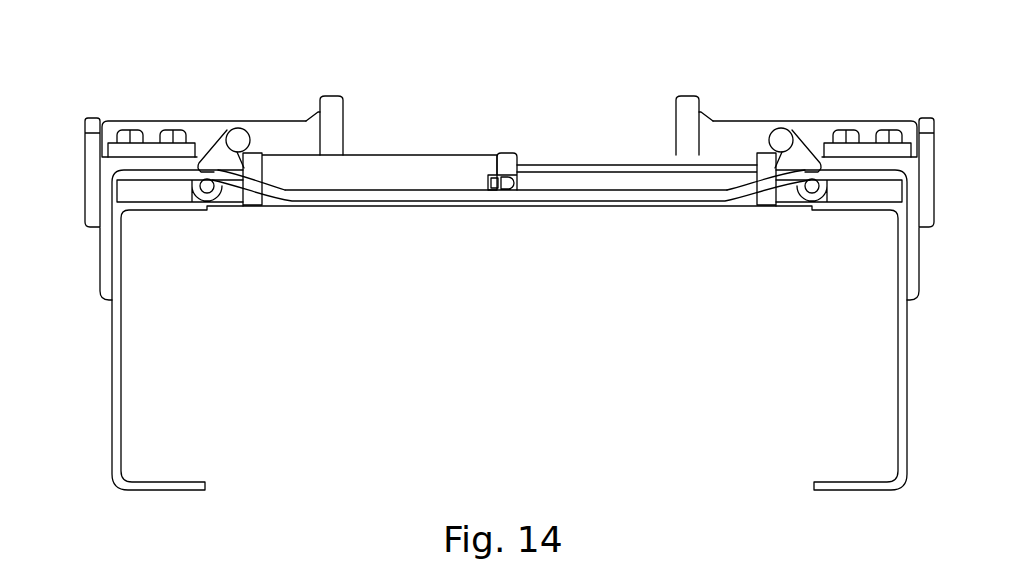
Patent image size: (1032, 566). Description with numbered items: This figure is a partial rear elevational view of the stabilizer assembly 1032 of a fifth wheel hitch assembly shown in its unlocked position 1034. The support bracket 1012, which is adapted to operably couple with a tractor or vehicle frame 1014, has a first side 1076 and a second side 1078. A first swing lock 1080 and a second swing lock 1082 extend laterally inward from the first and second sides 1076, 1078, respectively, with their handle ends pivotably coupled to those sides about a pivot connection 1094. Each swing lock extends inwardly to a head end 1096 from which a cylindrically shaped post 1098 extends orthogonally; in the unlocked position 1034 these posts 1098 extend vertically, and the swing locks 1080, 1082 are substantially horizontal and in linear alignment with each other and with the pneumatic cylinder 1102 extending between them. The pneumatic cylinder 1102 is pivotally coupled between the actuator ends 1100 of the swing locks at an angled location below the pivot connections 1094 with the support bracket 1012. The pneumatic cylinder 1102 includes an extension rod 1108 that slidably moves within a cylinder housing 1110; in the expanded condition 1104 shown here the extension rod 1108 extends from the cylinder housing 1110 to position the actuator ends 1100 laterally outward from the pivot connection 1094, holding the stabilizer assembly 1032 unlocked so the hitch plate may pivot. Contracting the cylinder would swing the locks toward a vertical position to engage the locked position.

The support bracket 1012 is at (100, 262).
The vehicle frame 1014 is at (117, 386).
The stabilizer assembly 1032 is at (338, 352).
The unlocked position 1034 is at (500, 88).
The first side 1076 is at (872, 163).
The second side 1078 is at (150, 163).
The first swing lock 1080 is at (733, 137).
The second swing lock 1082 is at (276, 137).
The pivot connection 1094 is at (238, 138).
The head end 1096 is at (343, 120).
The cylindrically shaped post 1098 is at (332, 112).
The actuator end 1100 is at (210, 188).
The pneumatic cylinder 1102 is at (470, 192).
The expanded condition 1104 is at (565, 153).
The extension rod 1108 is at (609, 183).
The cylinder housing 1110 is at (373, 183).